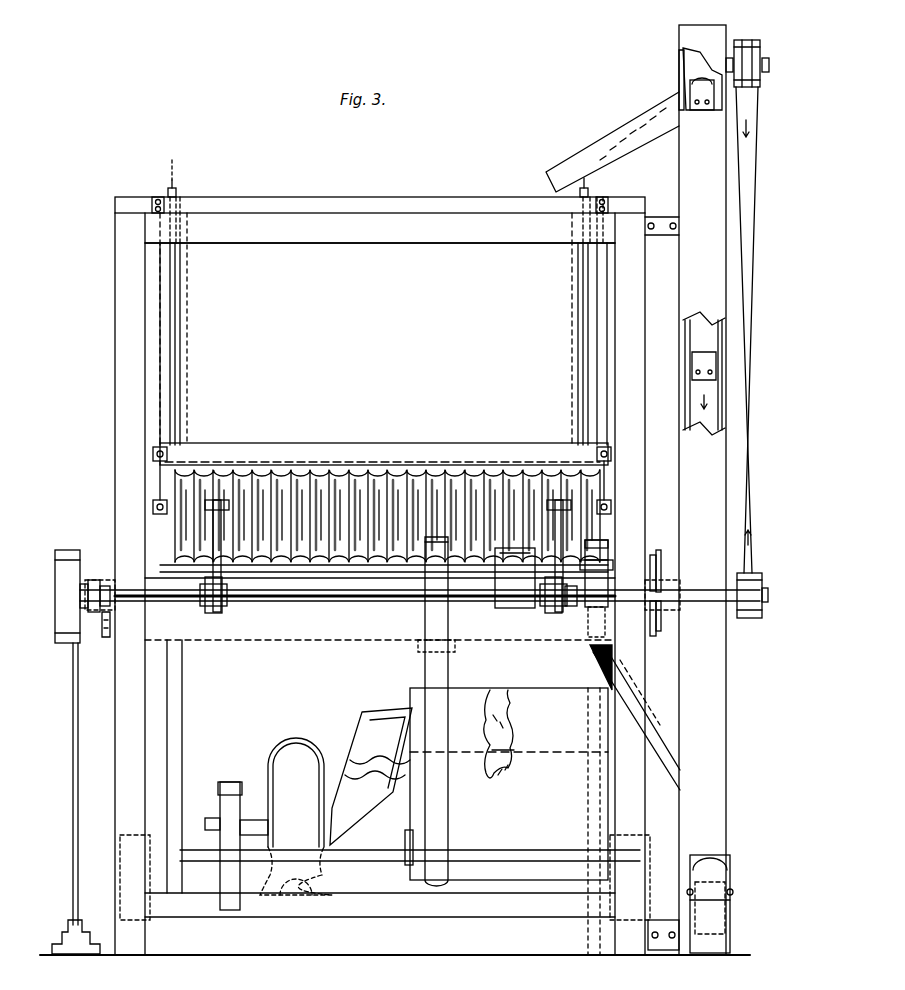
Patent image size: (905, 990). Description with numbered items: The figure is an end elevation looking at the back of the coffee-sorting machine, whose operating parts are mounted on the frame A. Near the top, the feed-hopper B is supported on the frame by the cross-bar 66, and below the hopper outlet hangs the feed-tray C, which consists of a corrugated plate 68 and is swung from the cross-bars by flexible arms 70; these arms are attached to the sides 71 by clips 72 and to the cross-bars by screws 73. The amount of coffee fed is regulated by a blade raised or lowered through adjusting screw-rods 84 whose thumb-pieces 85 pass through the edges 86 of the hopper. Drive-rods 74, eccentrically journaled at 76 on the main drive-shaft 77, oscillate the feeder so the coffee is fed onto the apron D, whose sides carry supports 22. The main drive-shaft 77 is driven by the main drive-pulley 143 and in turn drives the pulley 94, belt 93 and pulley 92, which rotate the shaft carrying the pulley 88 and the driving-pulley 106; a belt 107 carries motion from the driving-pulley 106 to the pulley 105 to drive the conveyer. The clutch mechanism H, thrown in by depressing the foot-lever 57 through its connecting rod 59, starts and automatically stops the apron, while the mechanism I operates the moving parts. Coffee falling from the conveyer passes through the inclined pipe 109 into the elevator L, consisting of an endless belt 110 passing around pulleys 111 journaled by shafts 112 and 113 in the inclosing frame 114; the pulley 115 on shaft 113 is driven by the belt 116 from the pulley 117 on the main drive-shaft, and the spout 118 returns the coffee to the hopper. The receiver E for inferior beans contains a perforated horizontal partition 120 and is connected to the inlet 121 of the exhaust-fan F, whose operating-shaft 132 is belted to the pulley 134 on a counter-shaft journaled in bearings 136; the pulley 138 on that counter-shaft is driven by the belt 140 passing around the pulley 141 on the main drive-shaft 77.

The supports 22 is at (182, 728).
The foot-lever 57 is at (65, 945).
The rod 59 is at (73, 776).
The cross-bar 66 is at (383, 205).
The corrugated plate 68 is at (330, 468).
The flexible arm 70 is at (172, 307).
The sides 71 is at (180, 452).
The clips 72 is at (153, 453).
The screws 73 is at (156, 199).
The drive-rods 74 is at (210, 556).
The eccentric journal 76 is at (214, 614).
The main drive-shaft 77 is at (312, 614).
The adjusting screw-rods 84 is at (182, 347).
The thumb-pieces 85 is at (176, 188).
The edges of the hopper 86 is at (172, 185).
The pulley 88 is at (80, 570).
The pulley 92 is at (606, 542).
The belt 93 is at (570, 605).
The pulley 94 is at (610, 562).
The pulley 105 is at (660, 562).
The driving-pulley 106 is at (660, 605).
The belt 107 is at (662, 554).
The pipe 109 is at (657, 718).
The endless belt 110 is at (698, 82).
The pulleys 111 is at (686, 58).
The shaft 112 is at (735, 897).
The shaft 113 is at (770, 68).
The inclosing frame 114 is at (728, 800).
The pulley 115 is at (761, 44).
The belt 116 is at (752, 132).
The pulley 117 is at (766, 578).
The spout 118 is at (628, 128).
The horizontal partition 120 is at (508, 765).
The inlet 121 is at (365, 725).
The operating-shaft 132 is at (260, 815).
The pulley 134 is at (240, 800).
The bearings 136 is at (210, 815).
The pulley 138 is at (452, 848).
The belt 140 is at (449, 668).
The pulley 141 is at (424, 645).
The main drive-pulley 143 is at (515, 578).
The frame A is at (118, 358).
The feed-hopper B is at (380, 337).
The feed-tray C is at (265, 578).
The apron D is at (378, 578).
The receiver E is at (509, 821).
The exhaust-fan F is at (290, 738).
The clutch mechanism H is at (80, 600).
The operating mechanism I is at (432, 605).
The elevator L is at (735, 216).